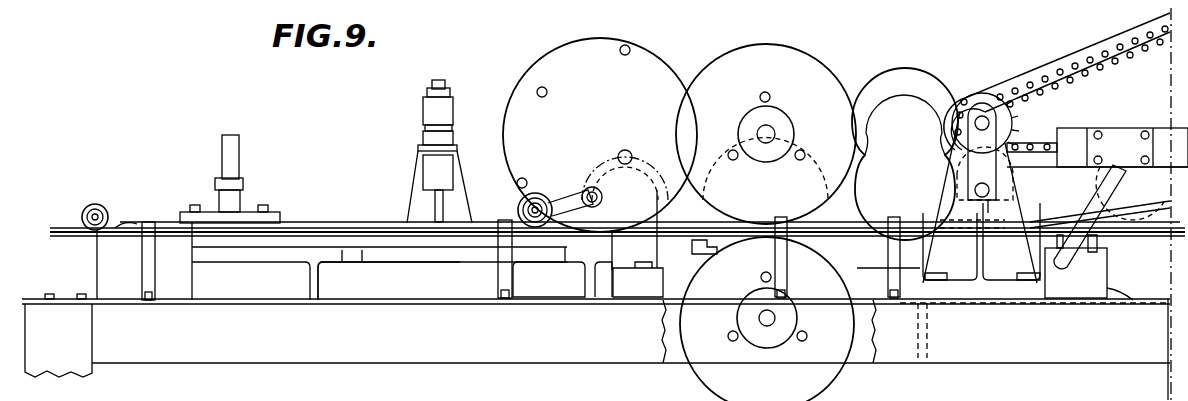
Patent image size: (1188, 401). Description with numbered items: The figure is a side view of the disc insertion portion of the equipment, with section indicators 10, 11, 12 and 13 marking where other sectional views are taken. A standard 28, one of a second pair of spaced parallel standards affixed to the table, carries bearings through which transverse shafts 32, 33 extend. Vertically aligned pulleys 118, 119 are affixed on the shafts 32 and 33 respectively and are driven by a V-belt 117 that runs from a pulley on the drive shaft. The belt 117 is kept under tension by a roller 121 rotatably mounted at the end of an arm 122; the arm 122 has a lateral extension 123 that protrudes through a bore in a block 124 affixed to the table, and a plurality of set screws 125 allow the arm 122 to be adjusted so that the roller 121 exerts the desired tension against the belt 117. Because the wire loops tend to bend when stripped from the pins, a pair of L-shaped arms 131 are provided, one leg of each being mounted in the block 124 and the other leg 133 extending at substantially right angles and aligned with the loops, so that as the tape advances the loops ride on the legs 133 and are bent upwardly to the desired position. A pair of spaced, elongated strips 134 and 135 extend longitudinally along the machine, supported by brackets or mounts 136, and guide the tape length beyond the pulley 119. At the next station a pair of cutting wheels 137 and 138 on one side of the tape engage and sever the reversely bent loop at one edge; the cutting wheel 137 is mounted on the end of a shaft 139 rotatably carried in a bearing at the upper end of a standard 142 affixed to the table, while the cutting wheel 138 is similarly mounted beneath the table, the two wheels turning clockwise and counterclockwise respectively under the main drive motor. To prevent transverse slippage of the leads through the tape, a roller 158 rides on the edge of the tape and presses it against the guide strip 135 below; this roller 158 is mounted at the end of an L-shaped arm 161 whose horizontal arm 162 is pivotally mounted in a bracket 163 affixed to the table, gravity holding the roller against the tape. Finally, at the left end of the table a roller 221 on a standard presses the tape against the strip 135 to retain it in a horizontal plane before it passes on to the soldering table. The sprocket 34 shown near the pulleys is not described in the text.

The section line 10 is at (235, 219).
The section line 11 is at (467, 222).
The section line 12 is at (886, 214).
The section line 13 is at (1125, 284).
The standard 28 is at (959, 258).
The transverse shaft 32 is at (987, 122).
The transverse shaft 33 is at (1010, 143).
The sprocket 34 is at (992, 97).
The V-belt 117 is at (1112, 258).
The pulley 118 is at (1018, 88).
The pulley 119 is at (1005, 187).
The roller 121 is at (1103, 172).
The arm 122 is at (1110, 268).
The lateral extension 123 is at (1050, 278).
The block 124 is at (1122, 298).
The set screws 125 is at (1045, 255).
The L-shaped arm 131 is at (1085, 231).
The leg 133 is at (1050, 235).
The elongated strip 134 is at (328, 224).
The elongated strip 135 is at (342, 250).
The brackets or mounts 136 is at (508, 280).
The cutting wheel 137 is at (771, 60).
The cutting wheel 138 is at (706, 373).
The shaft 139 is at (765, 140).
The standard 142 is at (835, 208).
The roller 158 is at (528, 183).
The L-shaped arm 161 is at (562, 197).
The horizontal arm 162 is at (600, 193).
The bracket 163 is at (600, 202).
The roller 221 is at (95, 203).